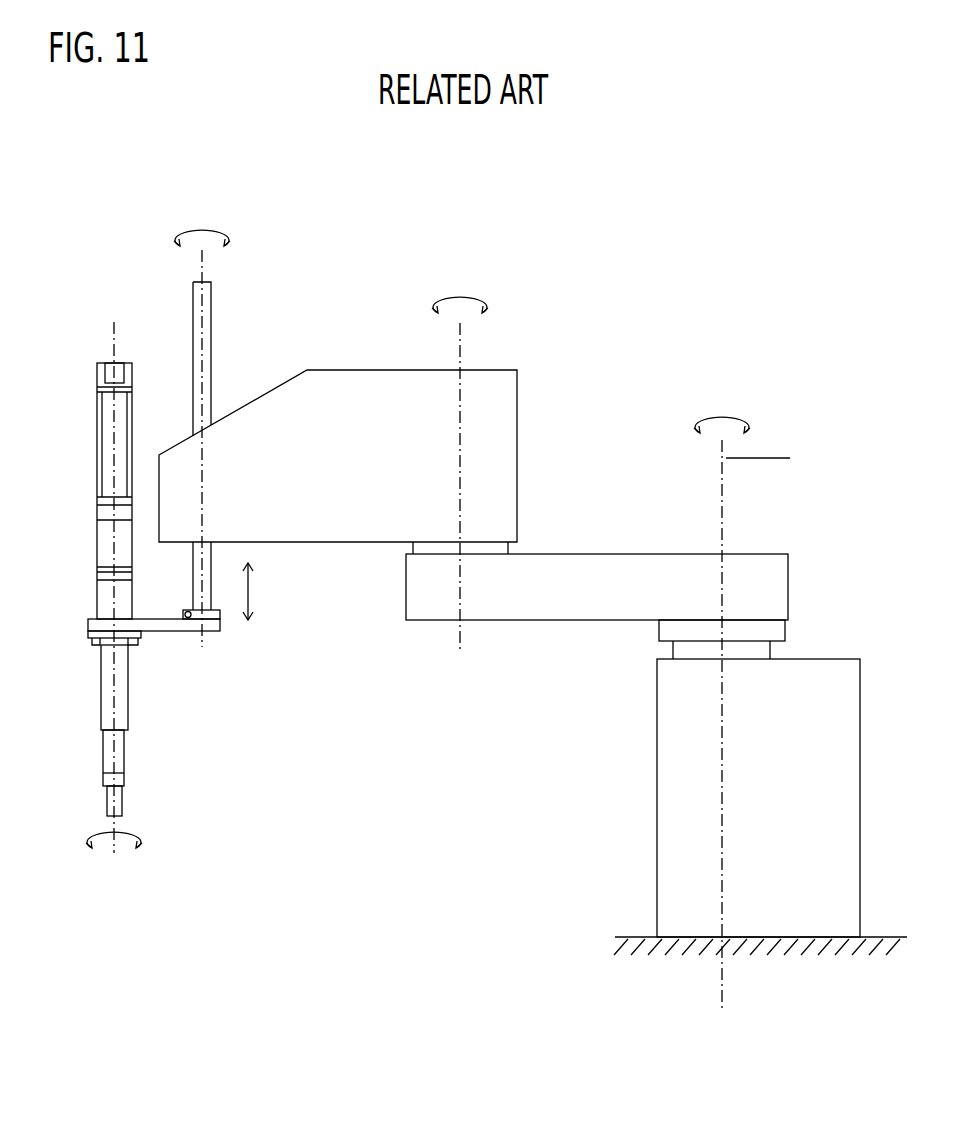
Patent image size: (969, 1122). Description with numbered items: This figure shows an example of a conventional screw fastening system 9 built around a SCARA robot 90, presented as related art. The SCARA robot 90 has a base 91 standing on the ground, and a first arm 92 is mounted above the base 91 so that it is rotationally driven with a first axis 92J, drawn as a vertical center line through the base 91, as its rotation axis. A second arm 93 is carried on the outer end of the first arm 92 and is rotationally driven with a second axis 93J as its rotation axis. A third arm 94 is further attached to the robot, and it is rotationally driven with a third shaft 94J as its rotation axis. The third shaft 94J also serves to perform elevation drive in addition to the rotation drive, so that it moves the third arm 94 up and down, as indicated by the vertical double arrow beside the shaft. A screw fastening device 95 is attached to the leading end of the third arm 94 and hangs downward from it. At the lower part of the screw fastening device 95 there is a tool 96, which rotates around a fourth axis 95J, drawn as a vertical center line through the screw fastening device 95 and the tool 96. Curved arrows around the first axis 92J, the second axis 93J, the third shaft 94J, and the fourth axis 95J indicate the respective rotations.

The screw fastening system 9 is at (480, 177).
The SCARA robot 90 is at (636, 362).
The base 91 is at (832, 670).
The first arm 92 is at (640, 554).
The first axis 92J is at (724, 508).
The second arm 93 is at (385, 370).
The second axis 93J is at (462, 351).
The third arm 94 is at (167, 633).
The third shaft 94J is at (212, 310).
The screw fastening device 95 is at (97, 440).
The fourth axis 95J is at (112, 340).
The tool 96 is at (107, 800).